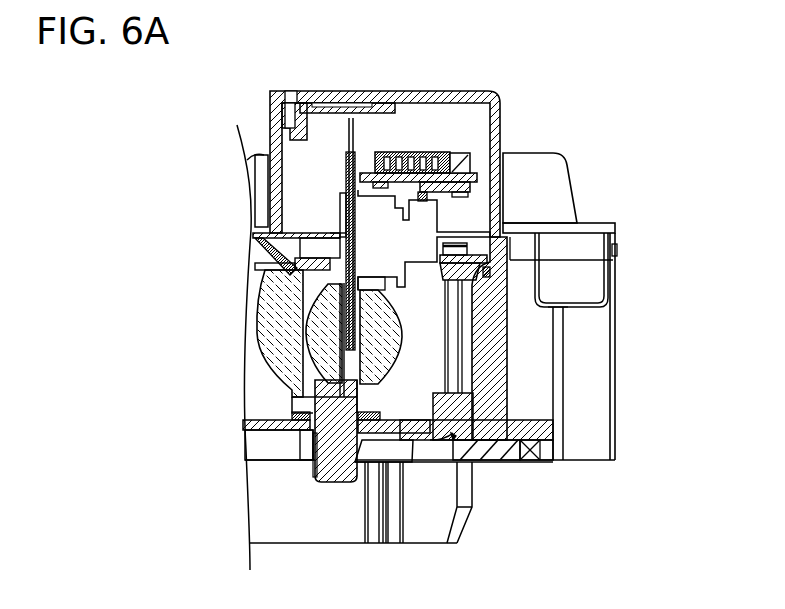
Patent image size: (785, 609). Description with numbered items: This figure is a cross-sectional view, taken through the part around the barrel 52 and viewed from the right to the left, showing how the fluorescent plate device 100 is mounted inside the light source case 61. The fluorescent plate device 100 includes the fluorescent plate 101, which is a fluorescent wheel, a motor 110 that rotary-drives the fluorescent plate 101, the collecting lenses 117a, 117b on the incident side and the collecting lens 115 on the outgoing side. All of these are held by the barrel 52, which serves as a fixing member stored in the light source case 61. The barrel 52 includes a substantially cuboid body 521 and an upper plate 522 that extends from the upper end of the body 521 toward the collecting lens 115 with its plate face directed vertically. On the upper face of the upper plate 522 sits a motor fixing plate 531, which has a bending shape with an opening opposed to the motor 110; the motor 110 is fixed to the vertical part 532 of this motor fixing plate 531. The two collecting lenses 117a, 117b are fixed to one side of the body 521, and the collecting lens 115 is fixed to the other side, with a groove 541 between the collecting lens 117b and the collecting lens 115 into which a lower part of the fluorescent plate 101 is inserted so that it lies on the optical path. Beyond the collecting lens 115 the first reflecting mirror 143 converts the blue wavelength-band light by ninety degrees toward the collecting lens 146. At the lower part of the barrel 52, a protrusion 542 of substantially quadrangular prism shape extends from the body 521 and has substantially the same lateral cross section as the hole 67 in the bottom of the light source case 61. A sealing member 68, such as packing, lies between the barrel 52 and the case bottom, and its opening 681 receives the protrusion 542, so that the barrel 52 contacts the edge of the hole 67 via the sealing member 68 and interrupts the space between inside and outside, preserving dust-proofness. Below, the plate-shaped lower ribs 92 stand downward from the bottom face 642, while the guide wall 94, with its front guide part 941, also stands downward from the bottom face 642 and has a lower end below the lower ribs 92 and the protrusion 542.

The fluorescent plate device 100 is at (477, 90).
The fluorescent plate 101 is at (350, 125).
The motor 110 is at (390, 198).
The motor fixing plate 531 is at (478, 187).
The vertical part 532 is at (428, 198).
The upper plate 522 is at (445, 275).
The first reflecting mirror 143 is at (465, 335).
The collecting lens 146 is at (435, 353).
The light source case 61 is at (618, 432).
The collecting lens 115 is at (553, 460).
The lower rib 92 is at (472, 453).
The body 521 is at (268, 233).
The collecting lens 117b is at (303, 307).
The collecting lens 117a is at (257, 317).
The opening 681 is at (292, 397).
The barrel 52 is at (292, 400).
The bottom face 642 is at (300, 428).
The sealing member 68 is at (312, 428).
The hole 67 is at (326, 468).
The protrusion 542 is at (307, 432).
The guide wall 94 is at (318, 544).
The groove 541 is at (362, 462).
The front guide part 941 is at (430, 527).